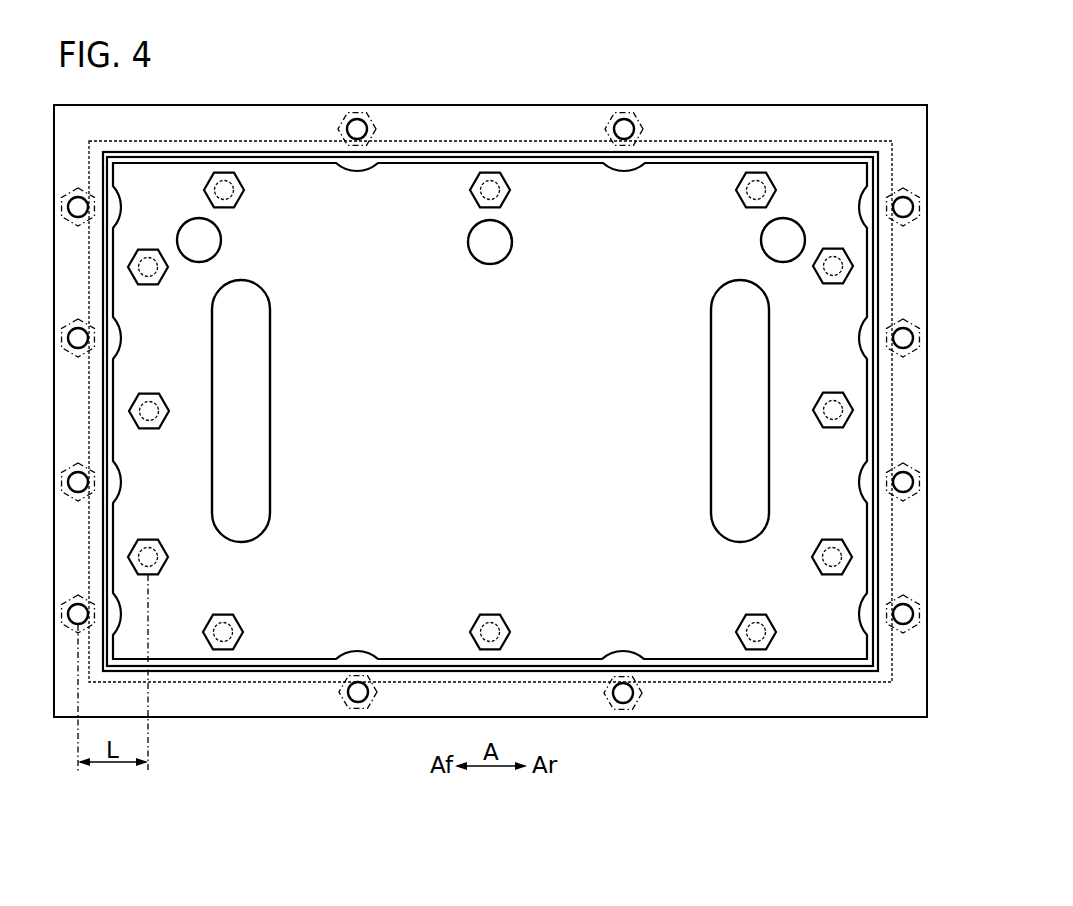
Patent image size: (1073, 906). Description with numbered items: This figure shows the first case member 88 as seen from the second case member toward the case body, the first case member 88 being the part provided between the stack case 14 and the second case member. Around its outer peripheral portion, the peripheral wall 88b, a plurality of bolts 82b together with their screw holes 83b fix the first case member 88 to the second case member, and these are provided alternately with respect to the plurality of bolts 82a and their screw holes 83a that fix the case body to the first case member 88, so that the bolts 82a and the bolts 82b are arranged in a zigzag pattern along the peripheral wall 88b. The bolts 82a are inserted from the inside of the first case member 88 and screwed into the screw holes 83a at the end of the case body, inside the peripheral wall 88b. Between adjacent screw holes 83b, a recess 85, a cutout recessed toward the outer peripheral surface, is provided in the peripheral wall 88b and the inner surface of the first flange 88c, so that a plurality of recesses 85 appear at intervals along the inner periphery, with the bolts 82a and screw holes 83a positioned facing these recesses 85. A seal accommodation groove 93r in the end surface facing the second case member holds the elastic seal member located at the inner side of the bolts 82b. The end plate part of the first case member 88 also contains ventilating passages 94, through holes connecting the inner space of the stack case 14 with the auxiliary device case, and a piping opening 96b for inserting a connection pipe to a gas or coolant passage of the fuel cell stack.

The stack case 14 is at (548, 411).
The bolt (first tightening member) 82a is at (490, 411).
The bolt (second tightening member) 82b is at (491, 413).
The screw hole 83a is at (477, 200).
The screw hole 83b is at (620, 118).
The recess (cutout) 85 is at (115, 300).
The first case member 88 is at (532, 411).
The peripheral wall 88b is at (902, 270).
The first flange 88c is at (928, 157).
The seal accommodation groove 93r is at (490, 360).
The ventilating passage 94 is at (210, 240).
The piping opening 96b is at (253, 373).